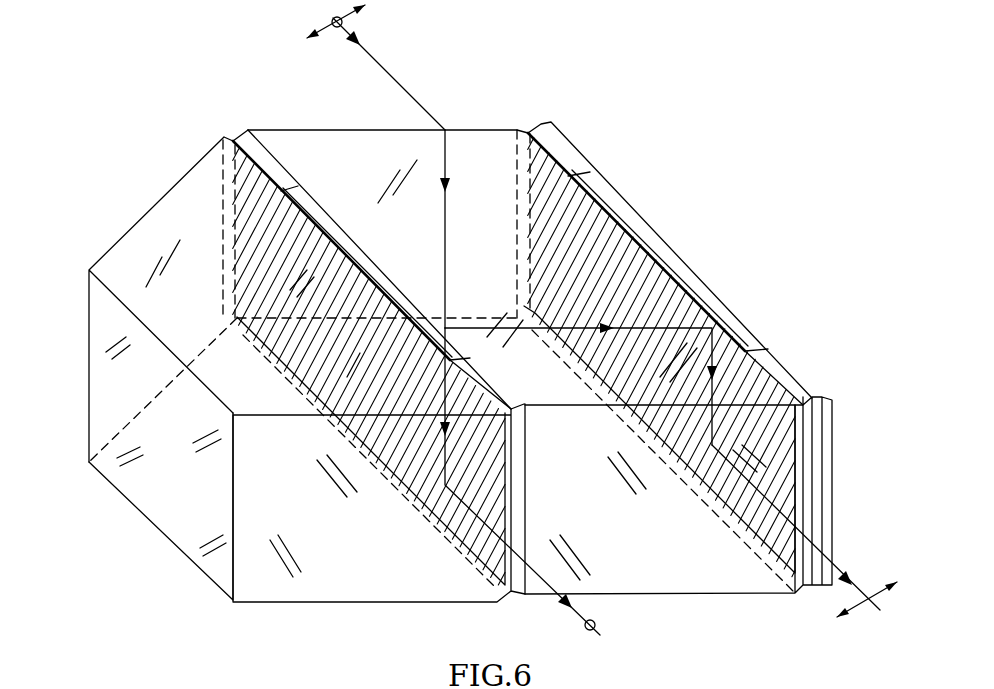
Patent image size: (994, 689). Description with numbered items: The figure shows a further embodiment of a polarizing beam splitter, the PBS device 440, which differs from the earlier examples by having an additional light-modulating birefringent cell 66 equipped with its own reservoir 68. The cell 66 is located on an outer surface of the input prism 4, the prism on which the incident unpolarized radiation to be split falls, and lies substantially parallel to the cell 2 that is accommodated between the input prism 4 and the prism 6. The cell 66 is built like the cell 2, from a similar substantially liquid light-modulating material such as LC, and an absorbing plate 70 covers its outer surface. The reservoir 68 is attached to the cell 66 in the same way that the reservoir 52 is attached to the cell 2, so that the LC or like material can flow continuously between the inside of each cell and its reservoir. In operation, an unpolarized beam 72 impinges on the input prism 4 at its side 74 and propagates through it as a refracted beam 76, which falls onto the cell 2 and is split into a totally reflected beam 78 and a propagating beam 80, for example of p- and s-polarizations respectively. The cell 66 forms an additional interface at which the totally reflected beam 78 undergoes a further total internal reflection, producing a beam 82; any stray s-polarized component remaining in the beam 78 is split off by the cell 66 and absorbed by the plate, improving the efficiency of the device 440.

The PBS device 440 is at (210, 118).
The cell 2 is at (197, 260).
The input prism 4 is at (396, 147).
The prism 6 is at (172, 500).
The reservoir 52 is at (323, 190).
The additional light-modulating cell 66 is at (721, 412).
The reservoir 68 is at (676, 252).
The absorbing plate 70 is at (565, 133).
The unpolarized beam 72 is at (372, 43).
The side 74 is at (472, 153).
The refracted beam 76 is at (447, 223).
The totally reflected beam 78 is at (600, 240).
The propagating beam 80 is at (447, 420).
The beam 82 is at (710, 425).